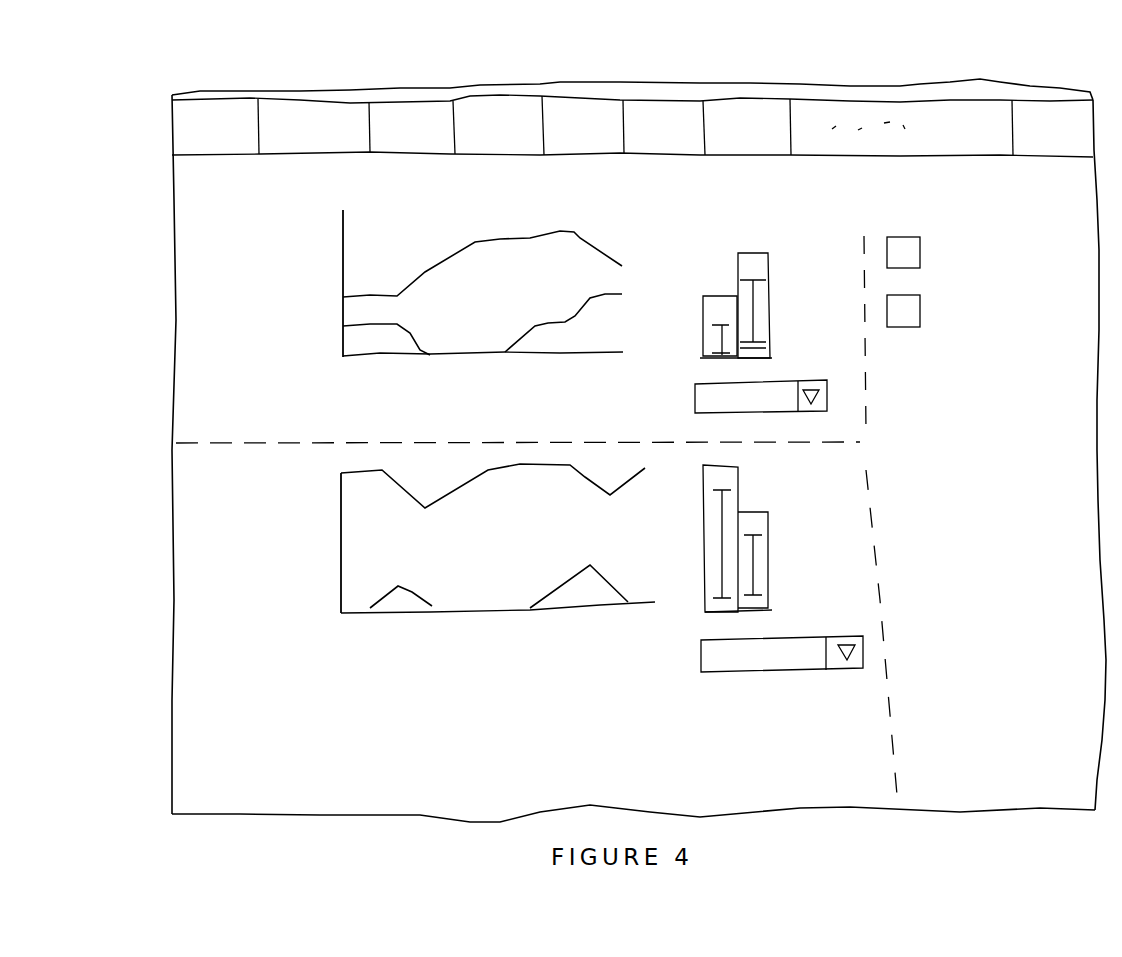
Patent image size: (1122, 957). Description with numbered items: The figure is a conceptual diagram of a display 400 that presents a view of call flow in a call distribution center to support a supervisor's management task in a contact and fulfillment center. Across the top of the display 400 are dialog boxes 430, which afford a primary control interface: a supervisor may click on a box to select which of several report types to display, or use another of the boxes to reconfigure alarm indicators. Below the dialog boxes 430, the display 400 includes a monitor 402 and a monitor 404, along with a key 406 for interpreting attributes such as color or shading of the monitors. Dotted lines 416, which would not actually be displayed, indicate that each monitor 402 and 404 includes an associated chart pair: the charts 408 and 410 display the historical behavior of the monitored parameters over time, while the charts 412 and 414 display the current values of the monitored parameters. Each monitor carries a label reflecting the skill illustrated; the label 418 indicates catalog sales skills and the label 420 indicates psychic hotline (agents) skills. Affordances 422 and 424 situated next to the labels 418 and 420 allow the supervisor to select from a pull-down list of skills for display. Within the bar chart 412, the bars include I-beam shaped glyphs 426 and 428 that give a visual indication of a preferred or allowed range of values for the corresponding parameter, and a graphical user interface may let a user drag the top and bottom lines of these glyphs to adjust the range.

The display 400 is at (890, 65).
The monitor 402 is at (201, 289).
The monitor 404 is at (204, 535).
The key 406 is at (981, 302).
The line chart 408 is at (548, 206).
The line chart 410 is at (460, 658).
The bar chart 412 is at (755, 233).
The bar chart 414 is at (765, 482).
The dotted lines 416 is at (863, 446).
The label 418 is at (745, 408).
The label 420 is at (752, 672).
The affordance 422 is at (818, 378).
The affordance 424 is at (841, 640).
The I-beam shaped glyph 426 is at (757, 288).
The I-beam shaped glyph 428 is at (716, 336).
The dialog boxes 430 is at (240, 84).